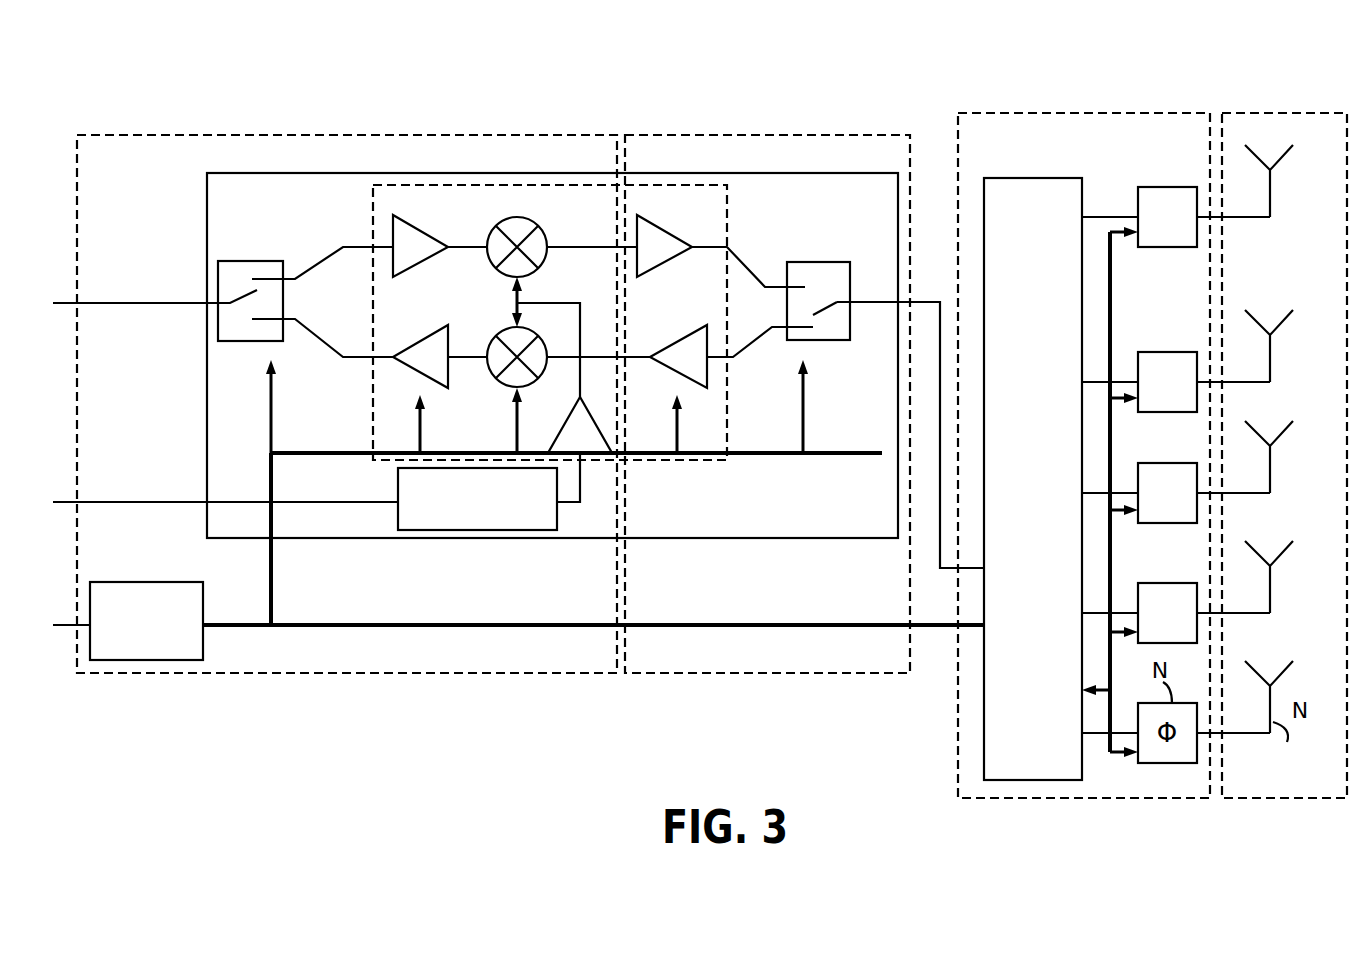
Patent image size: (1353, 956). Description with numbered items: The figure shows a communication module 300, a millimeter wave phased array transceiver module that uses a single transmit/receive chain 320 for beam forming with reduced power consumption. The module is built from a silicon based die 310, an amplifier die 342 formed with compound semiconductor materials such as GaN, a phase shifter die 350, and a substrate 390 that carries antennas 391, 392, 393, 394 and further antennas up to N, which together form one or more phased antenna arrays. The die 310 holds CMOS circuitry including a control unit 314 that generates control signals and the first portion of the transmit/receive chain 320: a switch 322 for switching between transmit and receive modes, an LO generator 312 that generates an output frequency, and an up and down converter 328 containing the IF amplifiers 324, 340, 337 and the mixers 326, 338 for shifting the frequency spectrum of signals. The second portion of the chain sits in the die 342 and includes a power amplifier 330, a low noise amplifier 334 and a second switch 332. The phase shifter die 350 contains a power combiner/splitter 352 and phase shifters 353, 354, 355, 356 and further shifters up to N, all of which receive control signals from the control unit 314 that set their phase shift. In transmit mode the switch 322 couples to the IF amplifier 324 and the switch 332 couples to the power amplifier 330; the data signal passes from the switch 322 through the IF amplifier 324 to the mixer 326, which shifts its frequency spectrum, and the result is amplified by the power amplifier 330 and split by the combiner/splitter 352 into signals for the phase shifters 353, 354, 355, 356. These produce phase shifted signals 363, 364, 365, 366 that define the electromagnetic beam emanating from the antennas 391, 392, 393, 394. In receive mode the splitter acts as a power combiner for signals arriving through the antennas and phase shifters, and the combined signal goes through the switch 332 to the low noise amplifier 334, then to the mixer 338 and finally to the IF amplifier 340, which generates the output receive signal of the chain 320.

The communication module 300 is at (788, 54).
The silicon based die 310 is at (580, 133).
The LO generator 312 is at (522, 531).
The control unit 314 is at (150, 582).
The transmit/receive chain 320 is at (292, 173).
The switch 322 is at (235, 261).
The IF amplifier 324 is at (415, 225).
The mixer 326 is at (530, 220).
The up and down converter 328 is at (665, 462).
The power amplifier 330 is at (657, 225).
The switch 332 is at (787, 262).
The low noise amplifier 334 is at (682, 332).
The IF amplifier 337 is at (570, 418).
The mixer 338 is at (508, 325).
The IF amplifier 340 is at (427, 332).
The amplifier die 342 is at (782, 133).
The phase shifter die 350 is at (1068, 113).
The power combiner/splitter 352 is at (1055, 178).
The phase shifter 353 is at (1172, 187).
The phase shifter 354 is at (1172, 352).
The phase shifter 355 is at (1172, 463).
The phase shifter 356 is at (1172, 583).
The phase shifted signal 363 is at (1237, 219).
The phase shifted signal 364 is at (1237, 384).
The phase shifted signal 365 is at (1237, 495).
The phase shifted signal 366 is at (1237, 615).
The substrate 390 is at (1297, 113).
The antenna 391 is at (1285, 158).
The antenna 392 is at (1285, 323).
The antenna 393 is at (1285, 434).
The antenna 394 is at (1285, 554).